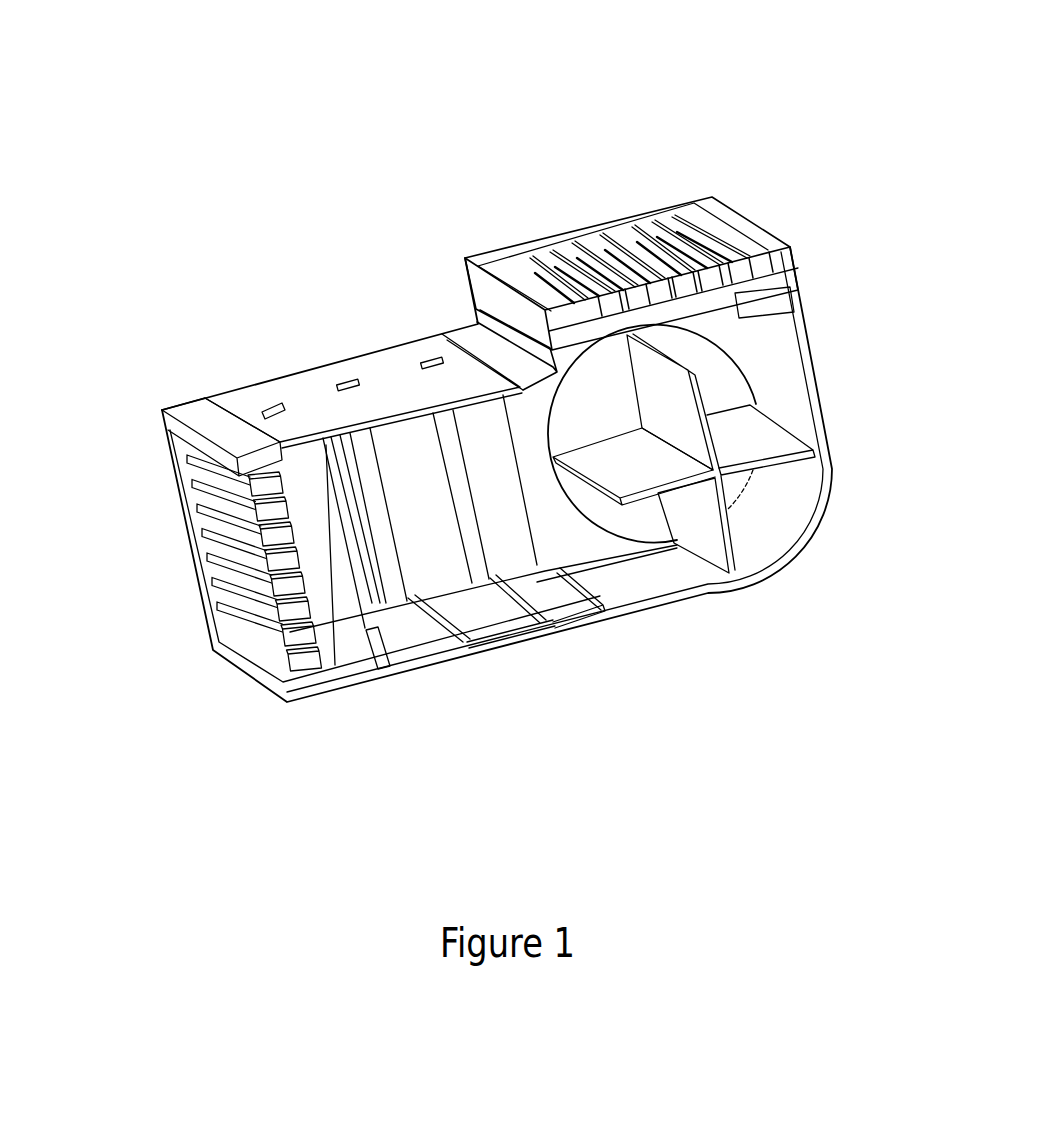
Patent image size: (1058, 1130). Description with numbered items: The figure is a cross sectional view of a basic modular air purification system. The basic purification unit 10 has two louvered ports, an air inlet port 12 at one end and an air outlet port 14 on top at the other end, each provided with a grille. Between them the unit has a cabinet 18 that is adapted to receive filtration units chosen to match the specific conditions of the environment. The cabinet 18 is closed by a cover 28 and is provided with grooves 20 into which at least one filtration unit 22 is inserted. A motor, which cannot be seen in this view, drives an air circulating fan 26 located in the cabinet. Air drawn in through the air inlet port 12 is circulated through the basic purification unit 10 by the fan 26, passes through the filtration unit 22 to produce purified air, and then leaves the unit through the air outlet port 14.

The basic purification unit 10 is at (356, 119).
The air inlet port 12 is at (190, 557).
The air outlet port 14 is at (657, 199).
The cabinet 18 is at (403, 455).
The grooves 20 is at (540, 623).
The filtration unit 22 is at (372, 642).
The air circulating fan 26 is at (711, 384).
The cover 28 is at (306, 388).